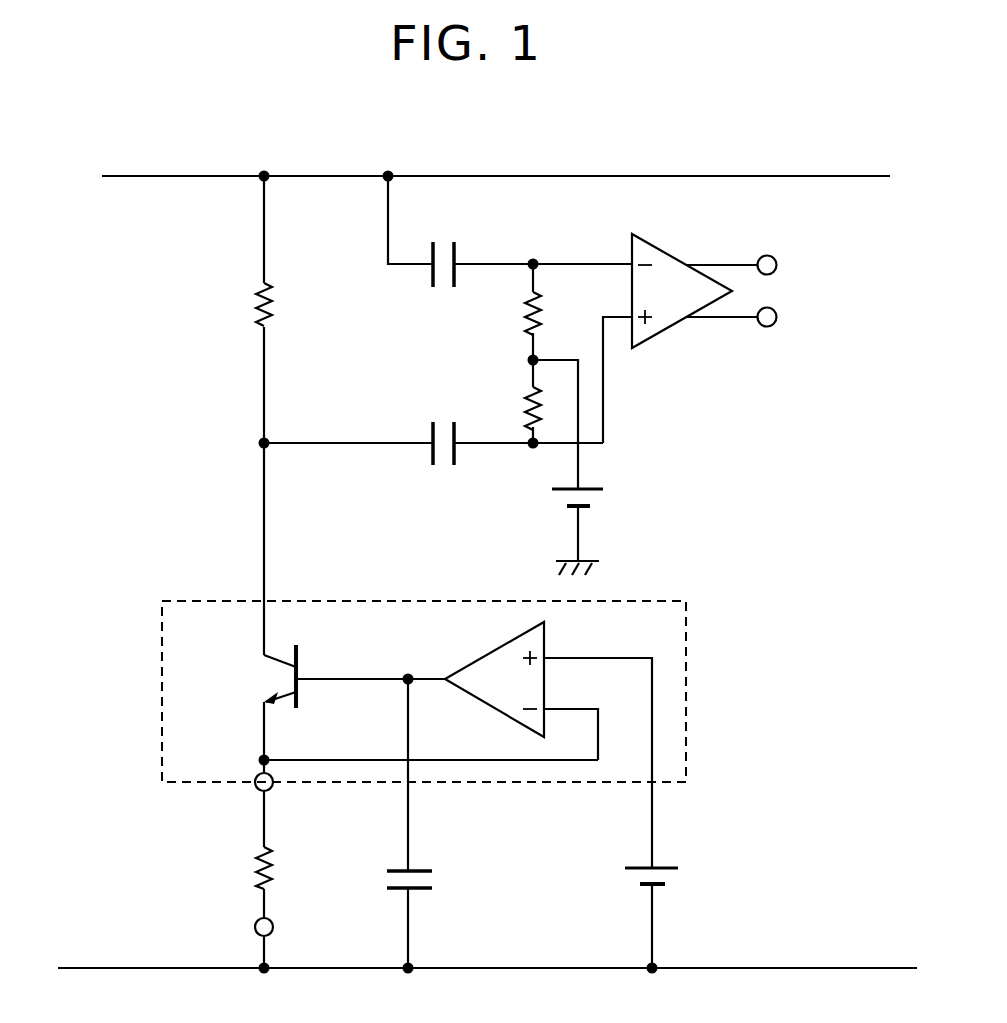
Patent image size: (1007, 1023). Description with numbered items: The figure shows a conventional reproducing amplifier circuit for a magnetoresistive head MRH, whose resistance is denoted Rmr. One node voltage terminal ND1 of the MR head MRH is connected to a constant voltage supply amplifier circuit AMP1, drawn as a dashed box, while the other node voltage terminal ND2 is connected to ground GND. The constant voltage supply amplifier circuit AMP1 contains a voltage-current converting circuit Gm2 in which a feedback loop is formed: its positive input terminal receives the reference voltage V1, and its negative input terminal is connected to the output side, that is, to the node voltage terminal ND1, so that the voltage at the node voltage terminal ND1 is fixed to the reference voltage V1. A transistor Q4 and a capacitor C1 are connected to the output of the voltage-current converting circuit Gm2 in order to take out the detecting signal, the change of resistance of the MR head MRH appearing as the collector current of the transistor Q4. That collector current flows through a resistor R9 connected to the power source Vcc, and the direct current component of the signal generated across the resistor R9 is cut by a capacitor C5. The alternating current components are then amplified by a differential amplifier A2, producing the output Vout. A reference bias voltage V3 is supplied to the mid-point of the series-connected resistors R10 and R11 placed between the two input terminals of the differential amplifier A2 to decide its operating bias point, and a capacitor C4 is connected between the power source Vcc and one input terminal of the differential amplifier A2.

The power source Vcc is at (496, 160).
The ground GND is at (488, 951).
The resistor R9 is at (242, 304).
The resistor R10 is at (506, 313).
The resistor R11 is at (506, 408).
The resistance of the MR head Rmr is at (234, 868).
The capacitor C1 is at (389, 879).
The capacitor C4 is at (444, 247).
The capacitor C5 is at (443, 464).
The reference voltage V1 is at (670, 881).
The reference bias voltage V3 is at (598, 499).
The transistor Q4 is at (260, 676).
The differential amplifier A2 is at (682, 291).
The voltage-current converting circuit Gm2 is at (494, 679).
The constant voltage supply amplifier circuit AMP1 is at (686, 630).
The MR head MRH is at (192, 845).
The node voltage terminal ND1 is at (290, 796).
The node voltage terminal ND2 is at (293, 929).
The output Vout is at (764, 291).